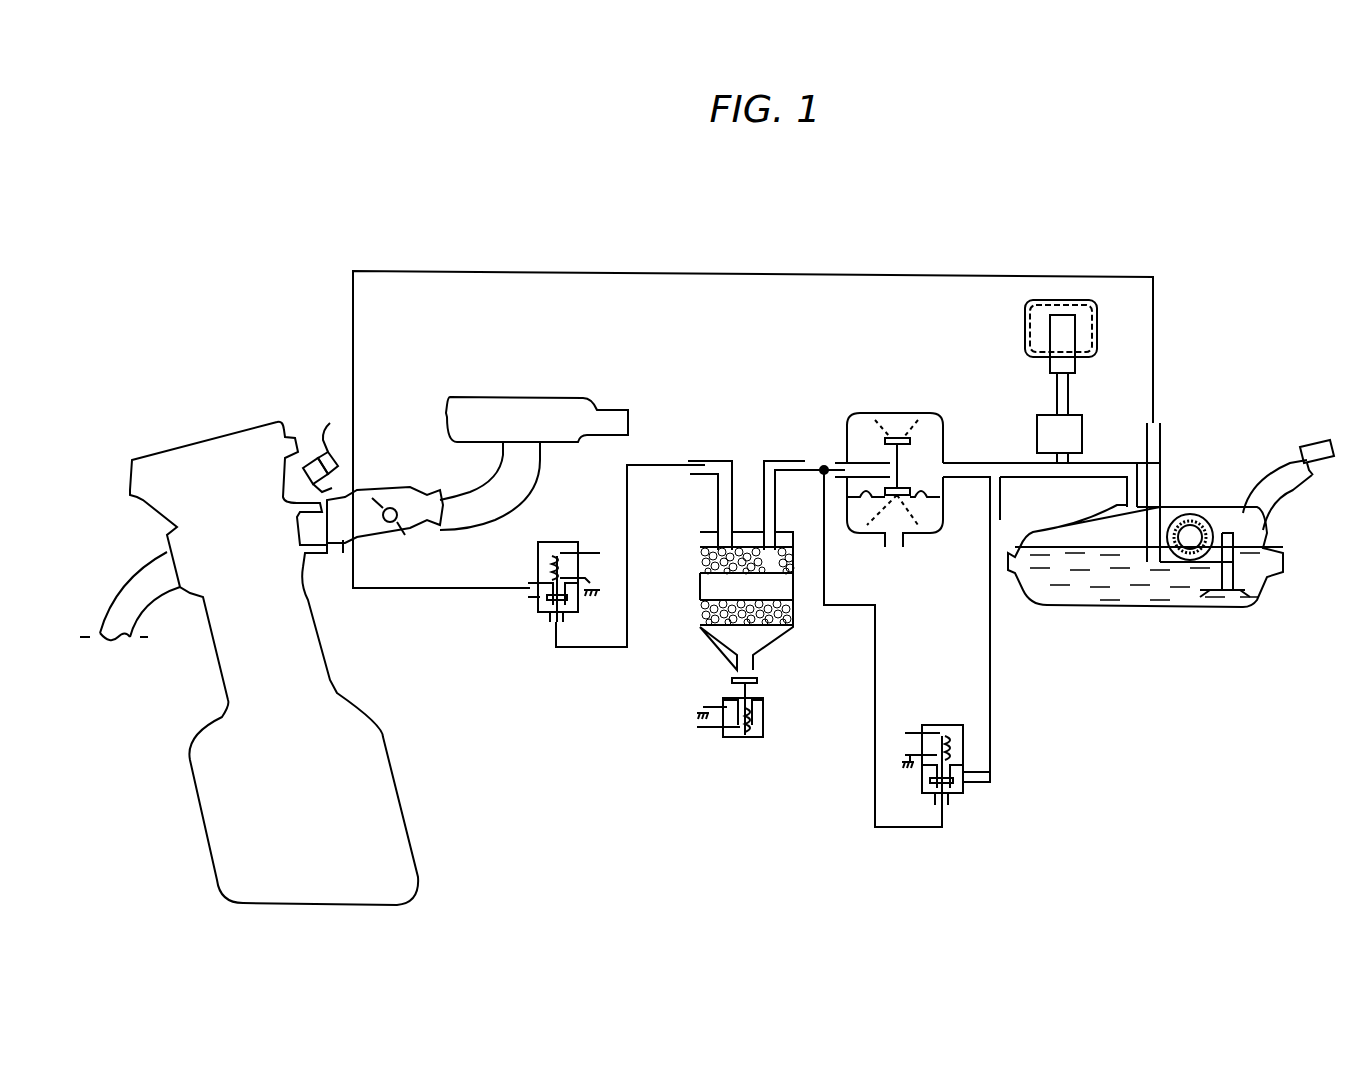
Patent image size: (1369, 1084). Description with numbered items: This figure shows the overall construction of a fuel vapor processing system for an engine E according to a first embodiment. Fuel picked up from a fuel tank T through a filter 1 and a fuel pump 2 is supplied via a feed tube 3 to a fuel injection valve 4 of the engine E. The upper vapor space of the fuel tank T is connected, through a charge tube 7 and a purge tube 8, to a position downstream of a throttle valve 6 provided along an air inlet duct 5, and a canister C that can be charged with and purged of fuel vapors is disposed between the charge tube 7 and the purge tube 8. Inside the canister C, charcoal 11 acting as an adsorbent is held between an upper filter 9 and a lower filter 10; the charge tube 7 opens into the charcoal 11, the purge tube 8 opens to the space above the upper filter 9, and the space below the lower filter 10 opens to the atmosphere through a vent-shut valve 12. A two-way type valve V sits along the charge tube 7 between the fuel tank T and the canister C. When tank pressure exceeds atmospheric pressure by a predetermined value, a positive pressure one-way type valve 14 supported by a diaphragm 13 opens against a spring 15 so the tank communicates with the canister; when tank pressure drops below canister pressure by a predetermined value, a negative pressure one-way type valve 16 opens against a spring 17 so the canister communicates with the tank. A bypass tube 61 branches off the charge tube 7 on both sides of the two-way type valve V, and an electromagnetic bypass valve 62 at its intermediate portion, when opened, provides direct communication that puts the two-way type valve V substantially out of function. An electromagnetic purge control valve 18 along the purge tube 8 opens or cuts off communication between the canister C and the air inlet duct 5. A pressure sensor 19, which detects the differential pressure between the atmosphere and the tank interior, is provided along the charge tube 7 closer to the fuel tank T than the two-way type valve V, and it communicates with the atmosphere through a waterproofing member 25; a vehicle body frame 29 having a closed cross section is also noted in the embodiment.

The filter 1 is at (1236, 588).
The fuel pump 2 is at (1200, 514).
The feed tube 3 is at (766, 275).
The fuel injection valve 4 is at (317, 453).
The air inlet duct 5 is at (478, 517).
The throttle valve 6 is at (390, 508).
The charge tube 7 is at (1020, 478).
The purge tube 8 is at (455, 596).
The upper filter 9 is at (718, 547).
The lower filter 10 is at (718, 625).
The charcoal 11 is at (716, 570).
The vent-shut valve 12 is at (748, 738).
The diaphragm 13 is at (872, 534).
The positive pressure one-way type valve 14 is at (905, 490).
The spring 15 is at (905, 536).
The negative pressure one-way type valve 16 is at (897, 437).
The spring 17 is at (848, 422).
The purge control valve 18 is at (557, 542).
The pressure sensor 19 is at (1059, 439).
The waterproofing member 25 is at (1062, 327).
The vehicle body frame 29 is at (1098, 350).
The bypass tube 61 is at (877, 655).
The bypass valve 62 is at (958, 806).
The engine E is at (412, 706).
The canister C is at (797, 612).
The two-way type valve V is at (945, 416).
The fuel tank T is at (1150, 607).